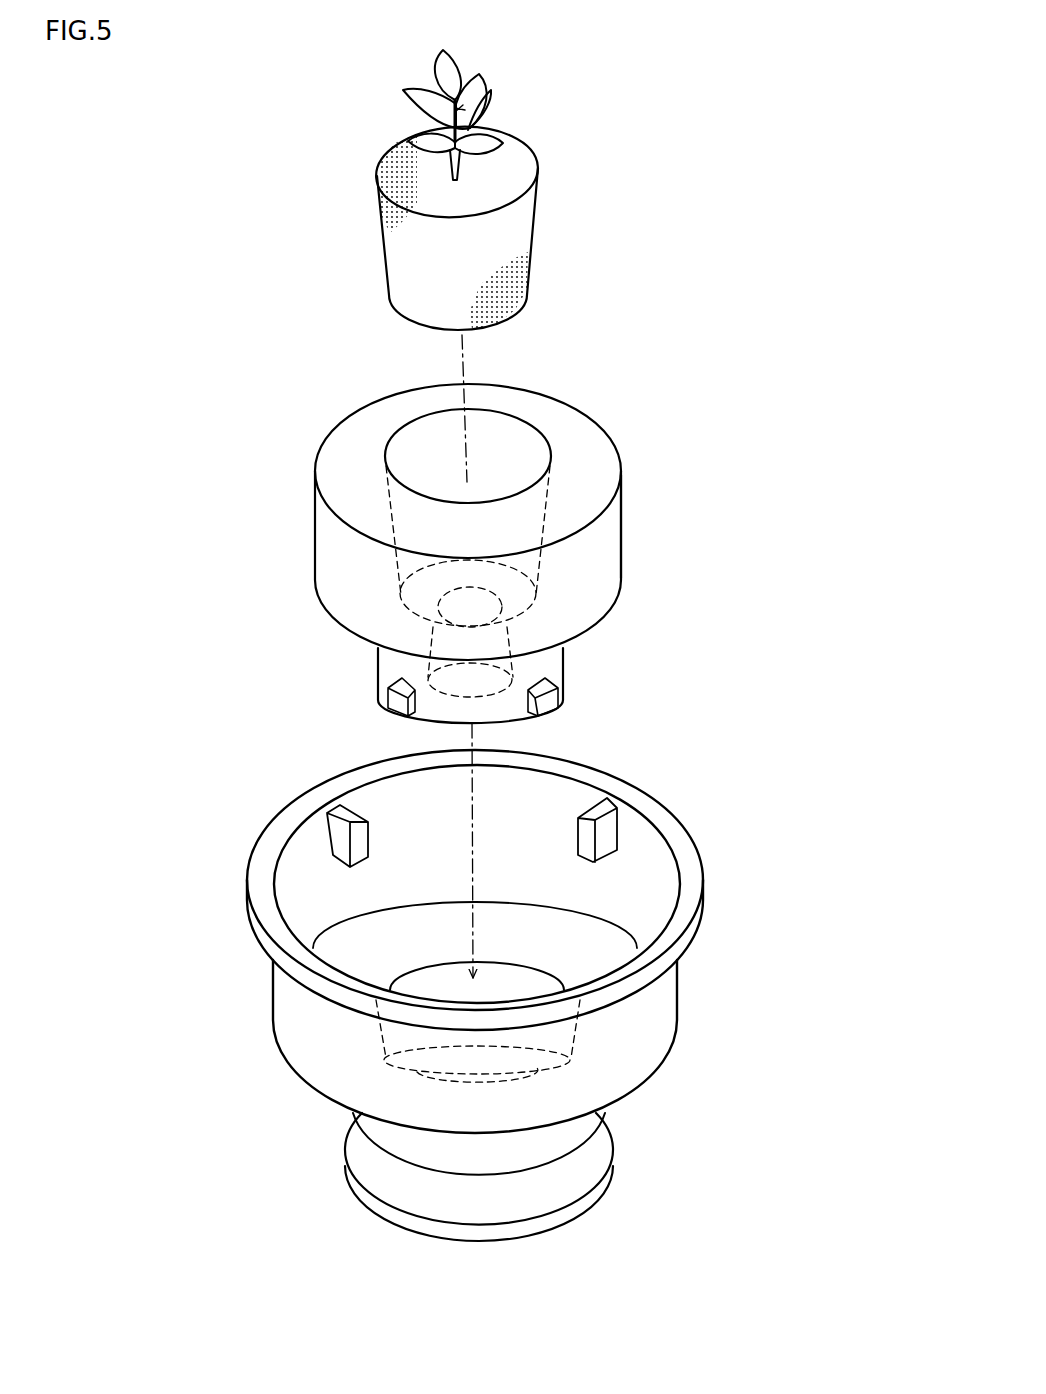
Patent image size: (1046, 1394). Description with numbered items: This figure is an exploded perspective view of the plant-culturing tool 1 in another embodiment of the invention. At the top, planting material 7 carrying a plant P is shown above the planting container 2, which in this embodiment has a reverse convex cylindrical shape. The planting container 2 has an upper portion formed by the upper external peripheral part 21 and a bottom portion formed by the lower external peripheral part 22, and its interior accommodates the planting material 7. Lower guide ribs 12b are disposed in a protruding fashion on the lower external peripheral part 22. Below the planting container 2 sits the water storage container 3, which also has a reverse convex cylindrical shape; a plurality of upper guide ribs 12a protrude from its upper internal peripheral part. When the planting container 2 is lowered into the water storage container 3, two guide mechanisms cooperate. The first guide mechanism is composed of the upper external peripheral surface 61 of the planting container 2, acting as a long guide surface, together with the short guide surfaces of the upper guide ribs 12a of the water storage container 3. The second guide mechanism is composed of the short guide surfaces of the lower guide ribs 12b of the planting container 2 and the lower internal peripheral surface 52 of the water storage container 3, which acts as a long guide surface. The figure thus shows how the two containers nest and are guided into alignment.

The plant-culturing tool 1 is at (204, 188).
The plant P is at (488, 108).
The planting material 7 is at (520, 213).
The planting container 2 is at (262, 570).
The upper external peripheral part 21 is at (335, 595).
The lower external peripheral part 22 is at (377, 660).
The upper external peripheral surface 61 is at (599, 550).
The lower guide ribs 12b is at (390, 704).
The water storage container 3 is at (290, 1040).
The upper guide ribs 12a is at (360, 845).
The lower internal peripheral surface 52 is at (533, 982).